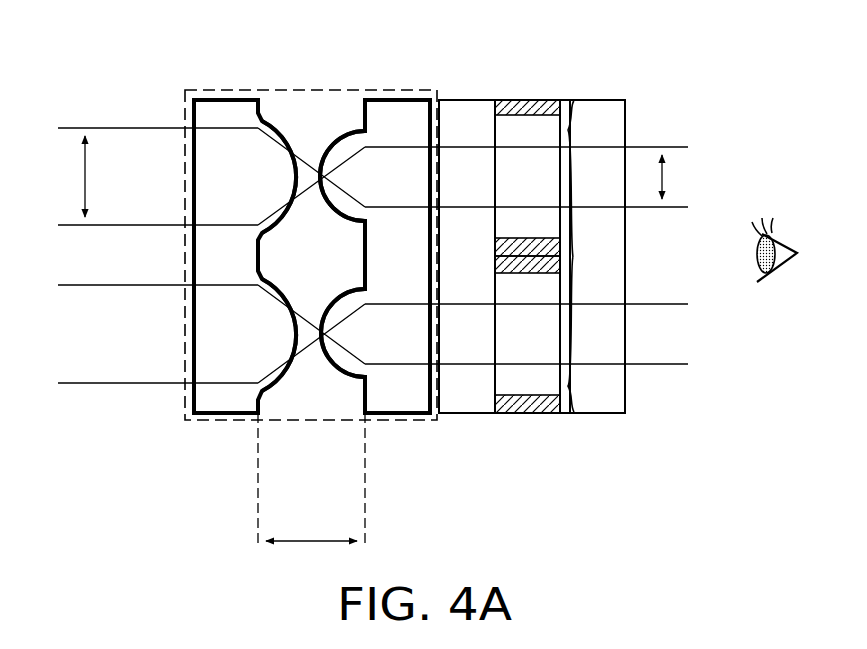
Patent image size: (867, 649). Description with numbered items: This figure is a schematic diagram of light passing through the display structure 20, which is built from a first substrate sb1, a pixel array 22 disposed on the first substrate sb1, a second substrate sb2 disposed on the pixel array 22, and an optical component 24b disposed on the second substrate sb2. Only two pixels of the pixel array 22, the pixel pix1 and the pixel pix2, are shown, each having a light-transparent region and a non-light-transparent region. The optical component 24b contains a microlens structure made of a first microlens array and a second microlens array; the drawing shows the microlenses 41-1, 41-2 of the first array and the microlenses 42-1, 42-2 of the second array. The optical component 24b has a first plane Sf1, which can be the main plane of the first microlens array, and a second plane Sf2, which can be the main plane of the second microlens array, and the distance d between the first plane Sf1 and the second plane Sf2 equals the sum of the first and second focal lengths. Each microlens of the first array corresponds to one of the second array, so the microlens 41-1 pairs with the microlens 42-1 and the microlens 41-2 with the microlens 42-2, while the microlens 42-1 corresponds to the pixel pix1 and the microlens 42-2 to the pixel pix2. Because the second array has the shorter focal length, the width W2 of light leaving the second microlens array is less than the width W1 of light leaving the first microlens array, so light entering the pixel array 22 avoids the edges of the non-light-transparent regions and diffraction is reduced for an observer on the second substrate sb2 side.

The optical component 24b is at (192, 86).
The microlens of the first microlens array 41-1 is at (286, 132).
The microlens of the first microlens array 41-2 is at (285, 383).
The microlens of the second microlens array 42-1 is at (322, 137).
The microlens of the second microlens array 42-2 is at (336, 365).
The first plane Sf1 is at (262, 107).
The second plane Sf2 is at (366, 110).
The display structure 20 is at (576, 244).
The second substrate sb2 is at (461, 100).
The pixel array 22 is at (527, 92).
The first substrate sb1 is at (596, 100).
The pixel pix1 is at (570, 130).
The pixel pix2 is at (570, 386).
The width of the light emitted from the microlens of the first microlens array W1 is at (61, 176).
The width of the light emitted from the microlens of the second microlens array W2 is at (688, 177).
The distance between the first plane and the second plane d is at (311, 479).